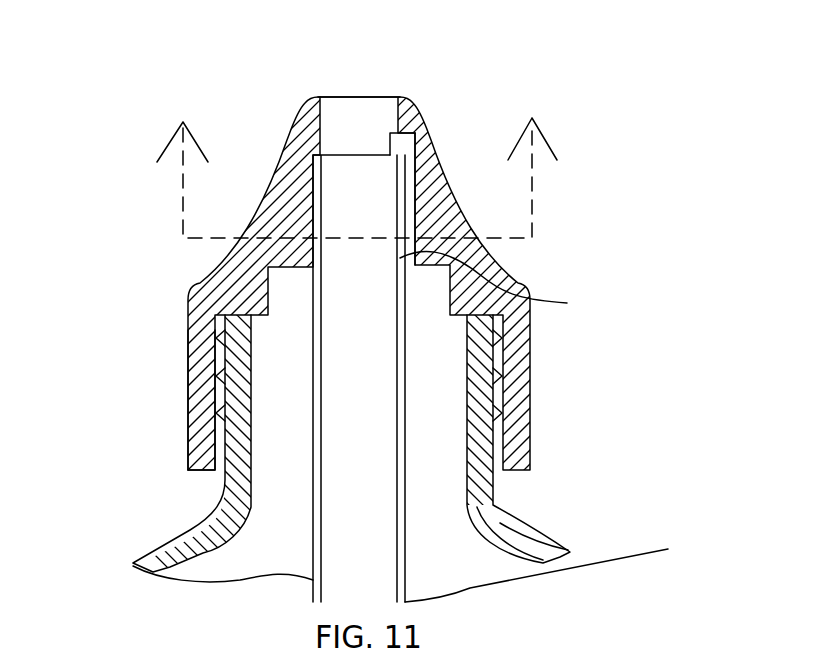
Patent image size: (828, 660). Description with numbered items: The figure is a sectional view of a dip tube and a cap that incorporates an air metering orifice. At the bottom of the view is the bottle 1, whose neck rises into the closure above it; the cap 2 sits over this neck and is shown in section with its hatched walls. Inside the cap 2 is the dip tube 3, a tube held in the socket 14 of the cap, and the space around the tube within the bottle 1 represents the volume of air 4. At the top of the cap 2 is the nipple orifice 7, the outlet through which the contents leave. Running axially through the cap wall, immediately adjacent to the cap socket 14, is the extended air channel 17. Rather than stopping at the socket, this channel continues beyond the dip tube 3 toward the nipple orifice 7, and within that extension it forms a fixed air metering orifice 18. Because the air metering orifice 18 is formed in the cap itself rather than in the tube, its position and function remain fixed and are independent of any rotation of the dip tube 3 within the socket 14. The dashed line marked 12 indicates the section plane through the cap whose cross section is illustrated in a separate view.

The bottle 1 is at (172, 540).
The cap 2 is at (196, 393).
The dip tube 3 is at (567, 303).
The volume of air 4 is at (447, 553).
The nipple orifice 7 is at (329, 97).
The line 12- 12 is at (357, 159).
The socket 14 is at (313, 262).
The extended air channel 17 is at (418, 210).
The air metering orifice 18 is at (403, 143).